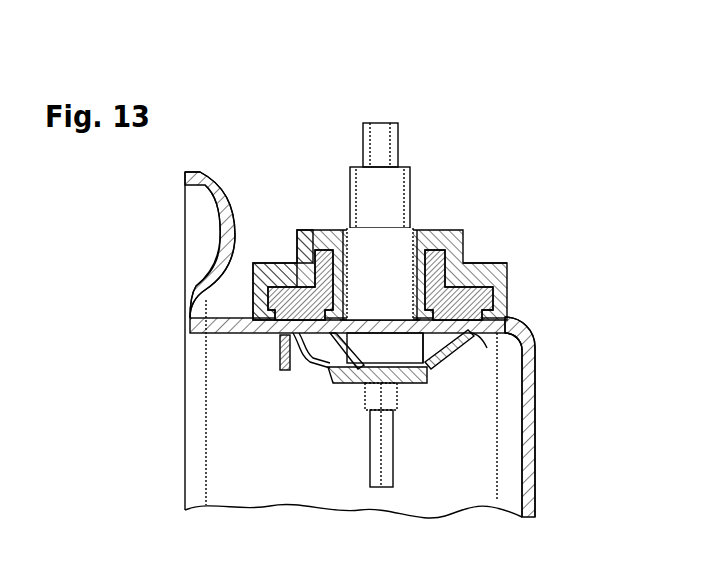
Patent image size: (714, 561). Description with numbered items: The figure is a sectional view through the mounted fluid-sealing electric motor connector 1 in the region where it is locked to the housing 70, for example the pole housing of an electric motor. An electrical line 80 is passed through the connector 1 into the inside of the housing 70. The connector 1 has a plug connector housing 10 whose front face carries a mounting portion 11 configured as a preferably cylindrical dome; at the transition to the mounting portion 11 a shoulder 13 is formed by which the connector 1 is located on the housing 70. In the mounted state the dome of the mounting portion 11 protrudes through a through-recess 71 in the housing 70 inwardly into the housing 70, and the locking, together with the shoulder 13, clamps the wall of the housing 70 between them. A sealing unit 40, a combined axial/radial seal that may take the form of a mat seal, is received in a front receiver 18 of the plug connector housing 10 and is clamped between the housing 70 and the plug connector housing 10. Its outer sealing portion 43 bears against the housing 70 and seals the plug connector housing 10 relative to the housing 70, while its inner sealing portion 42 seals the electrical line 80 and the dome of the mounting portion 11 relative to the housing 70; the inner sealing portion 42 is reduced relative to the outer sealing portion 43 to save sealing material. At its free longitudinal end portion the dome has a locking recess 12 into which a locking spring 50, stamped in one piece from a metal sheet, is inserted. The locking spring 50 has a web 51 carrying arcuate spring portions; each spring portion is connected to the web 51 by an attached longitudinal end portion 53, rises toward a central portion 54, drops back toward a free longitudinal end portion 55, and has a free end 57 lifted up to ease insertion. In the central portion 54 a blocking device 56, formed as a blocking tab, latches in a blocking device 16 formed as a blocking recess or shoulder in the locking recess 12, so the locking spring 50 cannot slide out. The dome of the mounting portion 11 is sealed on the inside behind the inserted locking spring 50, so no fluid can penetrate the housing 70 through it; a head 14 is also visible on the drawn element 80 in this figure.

The fluid-sealing electric motor connector 1 is at (499, 242).
The plug connector housing 10 is at (455, 246).
The mounting portion 11 is at (345, 380).
The locking recess 12 is at (445, 378).
The shoulder 13 is at (500, 298).
The head 14 is at (410, 228).
The blocking device 16 is at (403, 387).
The front receiver 18 is at (503, 270).
The sealing unit 40 is at (283, 262).
The inner sealing portion 42 is at (325, 262).
The outer sealing portion 43 is at (265, 291).
The locking spring 50 is at (272, 362).
The web 51 is at (283, 373).
The attached longitudinal end portion 53 is at (306, 362).
The central portion 54 is at (350, 385).
The free longitudinal end portion 55 is at (492, 348).
The blocking device 56 is at (420, 385).
The free end 57 is at (497, 319).
The housing 70 is at (536, 392).
The through-recess 71 is at (440, 356).
The electrical line 80 is at (378, 140).